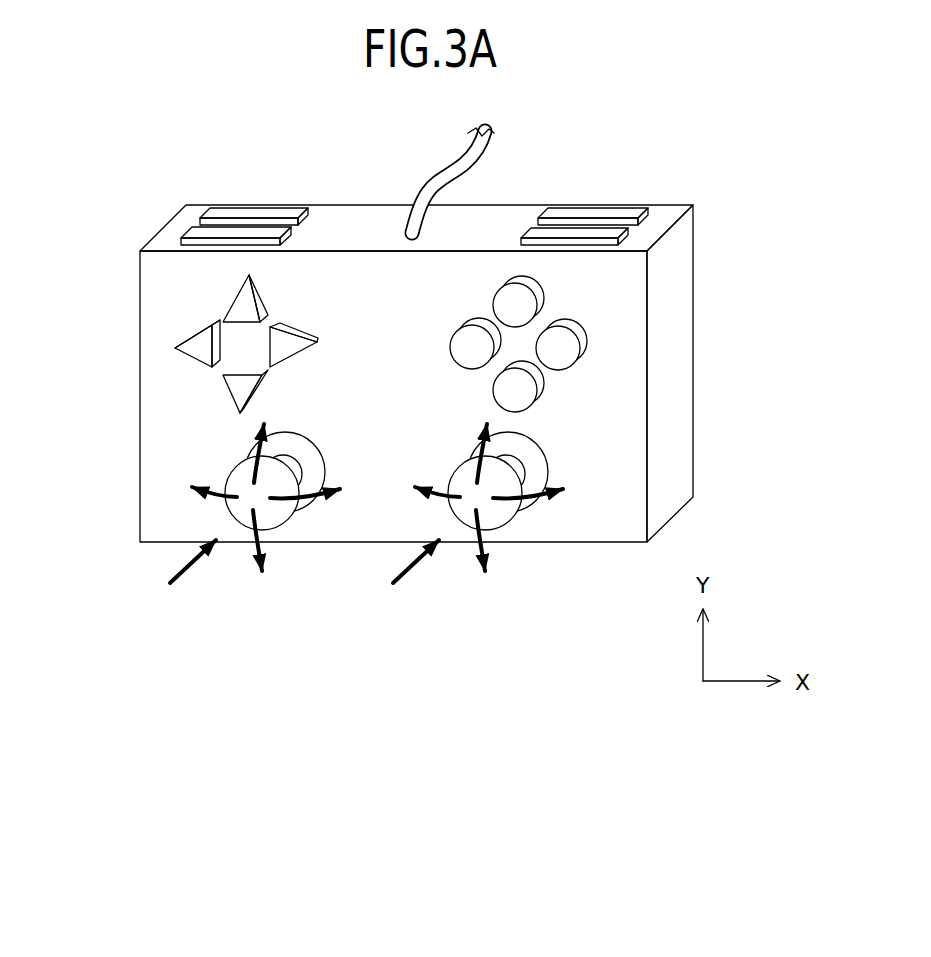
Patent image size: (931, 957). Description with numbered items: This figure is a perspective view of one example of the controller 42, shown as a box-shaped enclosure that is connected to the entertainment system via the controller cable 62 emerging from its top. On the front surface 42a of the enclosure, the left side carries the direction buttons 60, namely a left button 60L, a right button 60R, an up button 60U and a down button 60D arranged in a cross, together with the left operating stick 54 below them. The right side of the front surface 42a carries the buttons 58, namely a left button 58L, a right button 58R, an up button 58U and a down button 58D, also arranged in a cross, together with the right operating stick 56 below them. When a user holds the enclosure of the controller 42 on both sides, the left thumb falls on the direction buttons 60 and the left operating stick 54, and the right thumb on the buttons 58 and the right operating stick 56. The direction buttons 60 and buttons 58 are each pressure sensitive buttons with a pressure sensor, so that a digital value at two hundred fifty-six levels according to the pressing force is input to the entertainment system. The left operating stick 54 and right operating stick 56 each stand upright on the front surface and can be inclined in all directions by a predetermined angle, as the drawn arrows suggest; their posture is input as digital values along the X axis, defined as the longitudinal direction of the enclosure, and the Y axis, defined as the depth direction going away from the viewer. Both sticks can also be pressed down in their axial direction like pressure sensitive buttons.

The controller 42 is at (371, 472).
The front surface 42a is at (168, 458).
The left operating stick 54 is at (278, 517).
The right operating stick 56 is at (502, 515).
The buttons 58 is at (570, 362).
The up button 58U is at (502, 297).
The down button 58D is at (520, 403).
The left button 58L is at (455, 355).
The right button 58R is at (565, 362).
The direction buttons 60 is at (204, 343).
The up button 60U is at (255, 298).
The down button 60D is at (253, 390).
The left button 60L is at (192, 352).
The right button 60R is at (295, 335).
The controller cable 62 is at (432, 173).